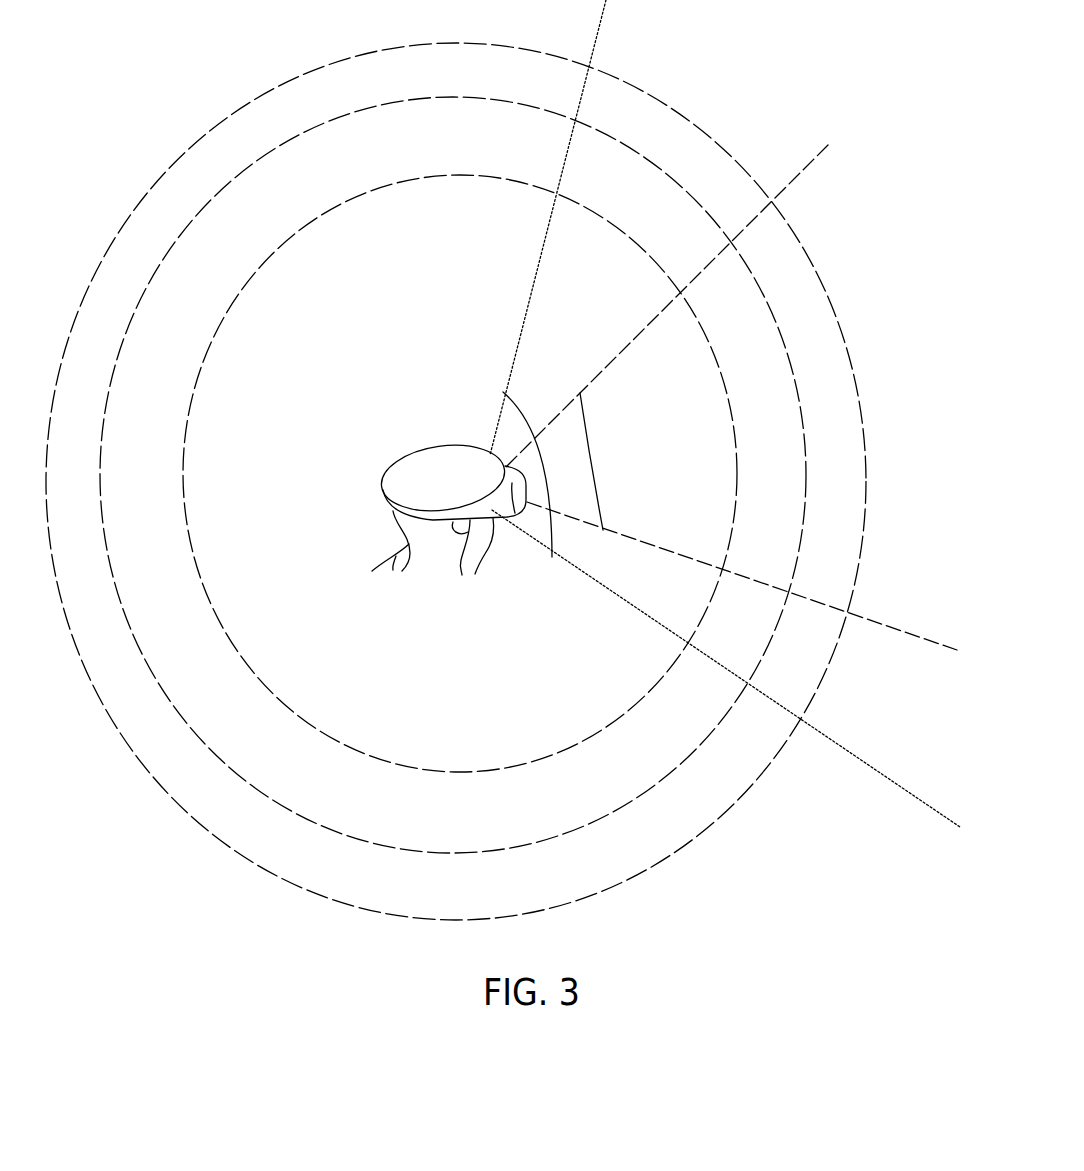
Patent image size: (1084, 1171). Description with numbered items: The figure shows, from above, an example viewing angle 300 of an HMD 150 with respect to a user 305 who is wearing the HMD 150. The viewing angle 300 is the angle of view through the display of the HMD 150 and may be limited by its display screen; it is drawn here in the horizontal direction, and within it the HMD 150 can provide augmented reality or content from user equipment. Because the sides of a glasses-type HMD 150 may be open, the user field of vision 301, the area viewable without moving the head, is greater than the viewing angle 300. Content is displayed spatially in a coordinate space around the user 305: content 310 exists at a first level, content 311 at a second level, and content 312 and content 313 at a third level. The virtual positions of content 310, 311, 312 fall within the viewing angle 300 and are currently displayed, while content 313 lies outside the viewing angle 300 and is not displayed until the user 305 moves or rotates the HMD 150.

The HMD 150 is at (488, 453).
The viewing angle 300 is at (589, 452).
The field of vision 301 is at (547, 380).
The user 305 is at (413, 456).
The content 310 is at (746, 339).
The content 311 is at (829, 379).
The content 312 is at (840, 245).
The content 313 is at (632, 58).